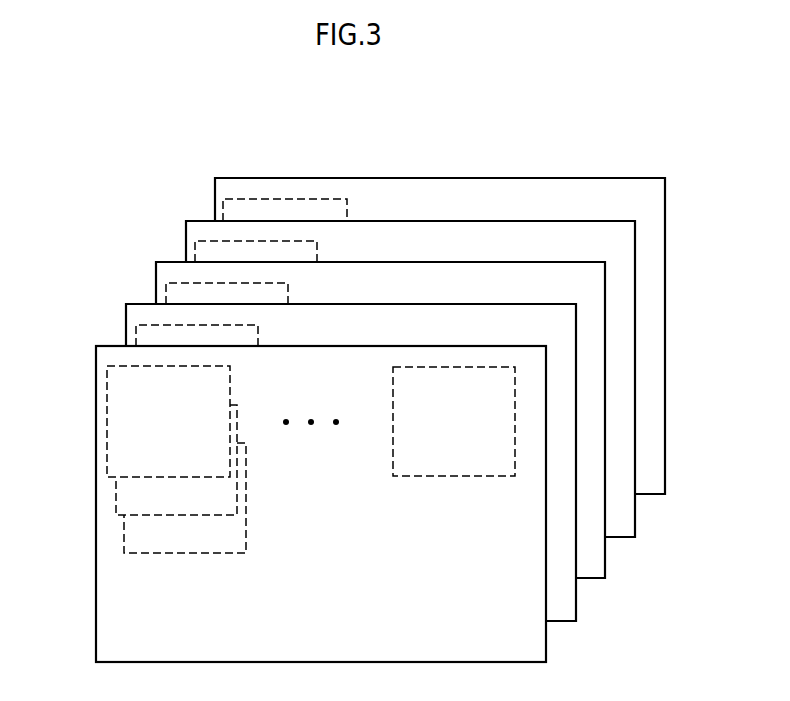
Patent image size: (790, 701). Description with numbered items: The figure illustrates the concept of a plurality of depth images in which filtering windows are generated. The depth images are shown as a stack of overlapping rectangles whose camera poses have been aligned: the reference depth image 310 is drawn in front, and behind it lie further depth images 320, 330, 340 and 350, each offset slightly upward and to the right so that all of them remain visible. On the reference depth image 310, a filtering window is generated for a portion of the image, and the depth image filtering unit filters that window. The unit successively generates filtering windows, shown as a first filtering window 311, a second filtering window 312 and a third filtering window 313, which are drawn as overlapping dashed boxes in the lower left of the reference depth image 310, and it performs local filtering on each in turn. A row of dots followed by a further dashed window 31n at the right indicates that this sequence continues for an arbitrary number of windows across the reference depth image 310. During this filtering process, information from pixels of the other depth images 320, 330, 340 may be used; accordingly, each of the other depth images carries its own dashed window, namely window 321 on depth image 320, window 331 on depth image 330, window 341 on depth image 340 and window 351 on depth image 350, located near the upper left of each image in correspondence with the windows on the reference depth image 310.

The reference depth image 310 is at (546, 648).
The depth image 320 is at (576, 607).
The depth image 330 is at (605, 564).
The depth image 340 is at (635, 522).
The fifth layer 350 is at (665, 480).
The first filtering window 311 is at (107, 383).
The second filtering window 312 is at (116, 498).
The third filtering window 313 is at (124, 533).
The n-th object of first layer 31n is at (412, 477).
The object of second layer 321 is at (136, 338).
The object of third layer 331 is at (166, 292).
The object of fourth layer 341 is at (195, 255).
The object of fifth layer 351 is at (318, 199).